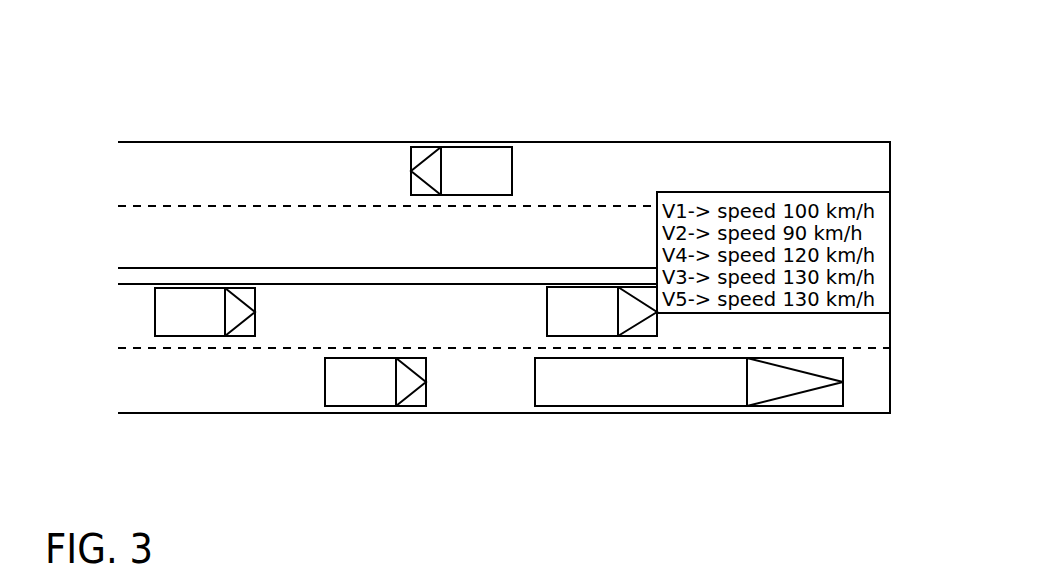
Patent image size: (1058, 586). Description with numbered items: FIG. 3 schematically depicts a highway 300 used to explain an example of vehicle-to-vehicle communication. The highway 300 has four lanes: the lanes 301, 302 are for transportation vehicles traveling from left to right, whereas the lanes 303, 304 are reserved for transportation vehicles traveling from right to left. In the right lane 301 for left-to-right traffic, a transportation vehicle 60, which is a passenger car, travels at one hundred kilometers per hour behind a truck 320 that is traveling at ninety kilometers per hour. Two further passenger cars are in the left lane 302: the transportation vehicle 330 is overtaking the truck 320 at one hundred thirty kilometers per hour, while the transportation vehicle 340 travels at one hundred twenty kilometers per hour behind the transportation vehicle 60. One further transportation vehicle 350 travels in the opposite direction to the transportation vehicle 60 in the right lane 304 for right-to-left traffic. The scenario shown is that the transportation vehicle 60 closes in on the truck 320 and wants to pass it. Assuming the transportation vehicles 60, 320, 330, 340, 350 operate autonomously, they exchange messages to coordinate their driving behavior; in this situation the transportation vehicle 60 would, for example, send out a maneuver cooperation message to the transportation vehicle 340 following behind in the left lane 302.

The highway 300 is at (744, 138).
The right lane 301 is at (860, 391).
The left lane 302 is at (860, 328).
The lane 303 is at (157, 237).
The right lane 304 is at (157, 177).
The truck 320 is at (648, 397).
The transportation vehicle 330 is at (554, 320).
The transportation vehicle 340 is at (213, 332).
The transportation vehicle 350 is at (465, 152).
The transportation vehicle 60 is at (376, 397).